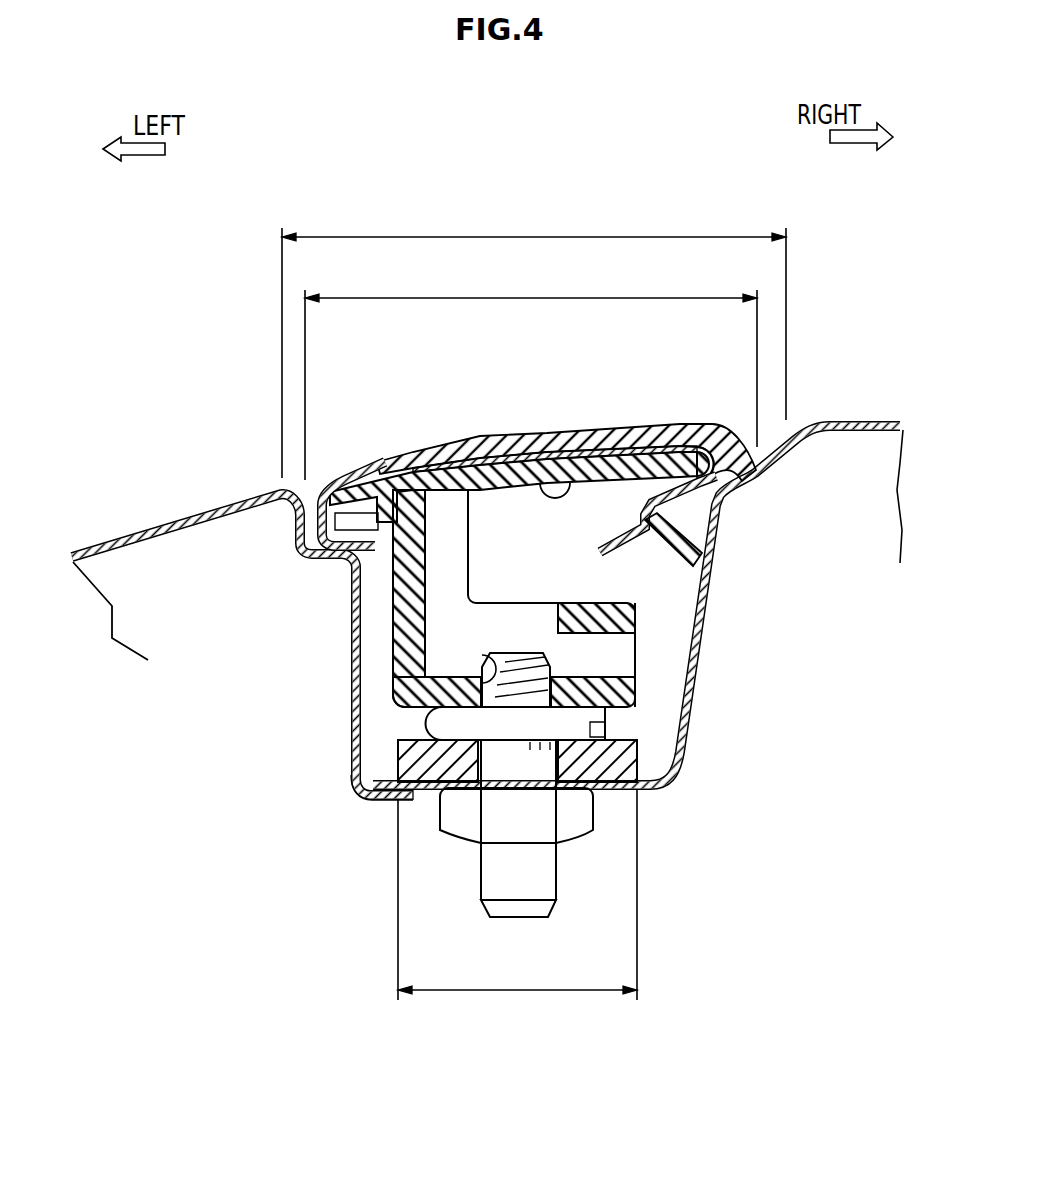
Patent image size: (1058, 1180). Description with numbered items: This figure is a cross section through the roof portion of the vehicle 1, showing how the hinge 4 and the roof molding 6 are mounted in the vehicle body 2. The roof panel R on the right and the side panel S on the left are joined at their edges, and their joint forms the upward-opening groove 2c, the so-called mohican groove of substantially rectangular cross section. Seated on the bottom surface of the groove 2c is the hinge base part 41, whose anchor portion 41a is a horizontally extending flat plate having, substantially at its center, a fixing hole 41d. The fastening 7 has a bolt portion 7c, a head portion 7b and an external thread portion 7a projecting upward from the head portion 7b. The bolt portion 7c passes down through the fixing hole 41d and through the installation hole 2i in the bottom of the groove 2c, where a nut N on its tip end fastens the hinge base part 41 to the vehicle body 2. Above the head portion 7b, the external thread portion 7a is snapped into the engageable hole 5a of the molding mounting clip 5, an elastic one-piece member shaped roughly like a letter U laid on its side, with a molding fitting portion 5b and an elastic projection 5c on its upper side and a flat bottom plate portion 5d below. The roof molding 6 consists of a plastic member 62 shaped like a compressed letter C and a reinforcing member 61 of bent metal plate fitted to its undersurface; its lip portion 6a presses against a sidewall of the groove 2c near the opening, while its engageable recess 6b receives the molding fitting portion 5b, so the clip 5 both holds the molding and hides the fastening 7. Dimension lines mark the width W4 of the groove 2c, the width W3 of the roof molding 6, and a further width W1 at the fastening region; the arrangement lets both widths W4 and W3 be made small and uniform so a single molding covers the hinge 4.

The vehicle 1 is at (165, 368).
The vehicle body 2 is at (825, 420).
The groove 2c is at (352, 765).
The installation hole 2i is at (480, 795).
The hinge 4 is at (647, 722).
The hinge base part 41 is at (647, 747).
The anchor portion 41a is at (623, 760).
The fixing hole 41d is at (545, 763).
The molding mounting clip 5 is at (388, 609).
The engageable hole 5a is at (476, 655).
The molding fitting portion 5b is at (551, 470).
The elastic projection 5c is at (703, 432).
The bottom plate portion 5d is at (623, 690).
The roof molding 6 is at (420, 447).
The lip portion 6a is at (752, 490).
The engageable recess 6b is at (343, 485).
The reinforcing member 61 is at (480, 447).
The plastic member 62 is at (598, 440).
The fastening 7 is at (555, 897).
The external thread portion 7a is at (553, 672).
The head portion 7b is at (622, 722).
The bolt portion 7c is at (530, 863).
The nut N is at (460, 835).
The side panel S is at (110, 540).
The roof panel R is at (880, 423).
The width W1 is at (517, 895).
The width of the roof molding W3 is at (531, 374).
The width of the groove W4 is at (534, 342).